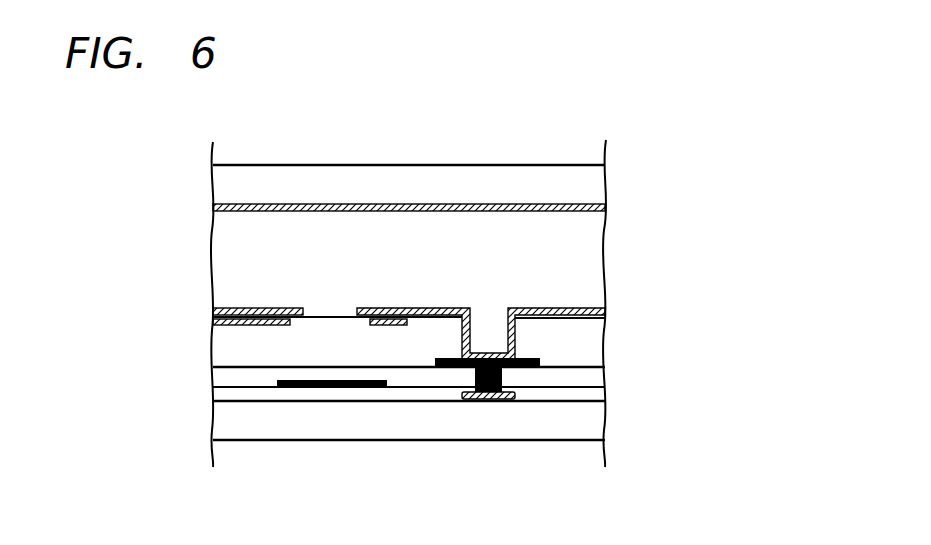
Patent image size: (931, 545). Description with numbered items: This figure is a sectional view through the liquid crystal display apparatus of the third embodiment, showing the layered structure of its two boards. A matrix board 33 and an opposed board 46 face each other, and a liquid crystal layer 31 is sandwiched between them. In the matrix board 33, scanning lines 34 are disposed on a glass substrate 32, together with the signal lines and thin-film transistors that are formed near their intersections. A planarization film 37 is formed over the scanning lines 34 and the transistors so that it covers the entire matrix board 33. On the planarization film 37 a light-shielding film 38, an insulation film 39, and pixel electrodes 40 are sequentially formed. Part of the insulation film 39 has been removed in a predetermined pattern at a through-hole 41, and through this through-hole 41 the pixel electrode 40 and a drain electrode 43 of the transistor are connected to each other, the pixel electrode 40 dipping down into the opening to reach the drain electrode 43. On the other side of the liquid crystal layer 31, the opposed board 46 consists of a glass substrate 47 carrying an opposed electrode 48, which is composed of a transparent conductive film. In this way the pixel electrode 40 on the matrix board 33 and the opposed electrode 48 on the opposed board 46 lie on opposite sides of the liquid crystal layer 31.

The liquid crystal layer 31 is at (666, 222).
The glass substrate 32 is at (219, 420).
The matrix board 33 is at (666, 300).
The scanning line 34 is at (323, 387).
The planarization film 37 is at (219, 348).
The light-shielding film 38 is at (215, 323).
The insulation film 39 is at (215, 317).
The pixel electrode 40 is at (215, 309).
The through-hole 41 is at (487, 323).
The drain electrode 43 is at (486, 399).
The opposed board 46 is at (666, 155).
The glass substrate 47 is at (223, 186).
The opposed electrode 48 is at (215, 207).